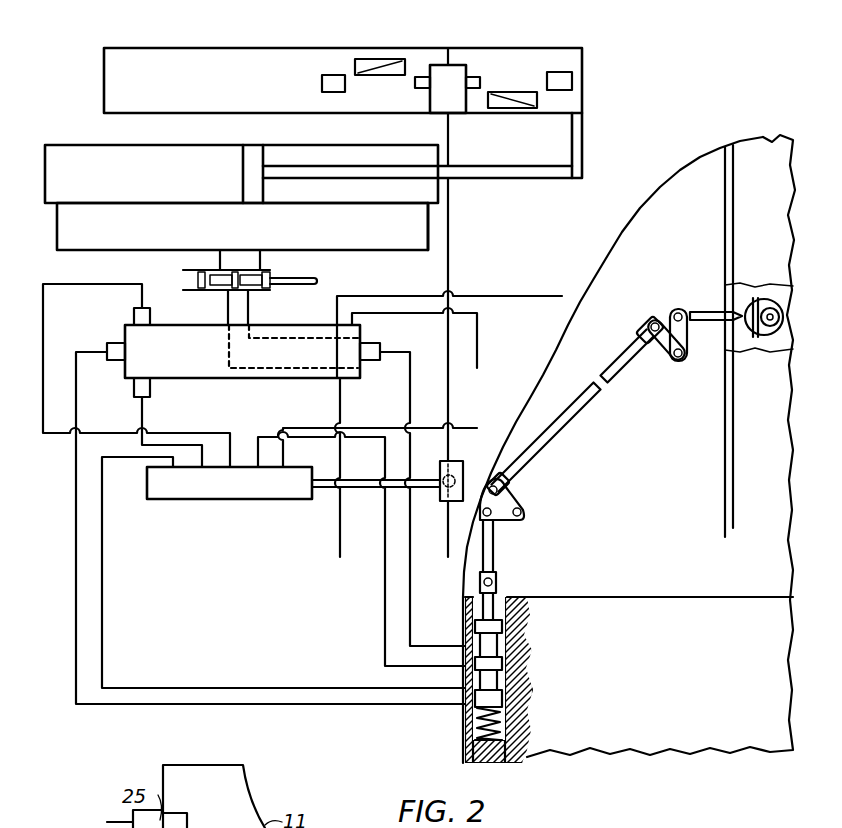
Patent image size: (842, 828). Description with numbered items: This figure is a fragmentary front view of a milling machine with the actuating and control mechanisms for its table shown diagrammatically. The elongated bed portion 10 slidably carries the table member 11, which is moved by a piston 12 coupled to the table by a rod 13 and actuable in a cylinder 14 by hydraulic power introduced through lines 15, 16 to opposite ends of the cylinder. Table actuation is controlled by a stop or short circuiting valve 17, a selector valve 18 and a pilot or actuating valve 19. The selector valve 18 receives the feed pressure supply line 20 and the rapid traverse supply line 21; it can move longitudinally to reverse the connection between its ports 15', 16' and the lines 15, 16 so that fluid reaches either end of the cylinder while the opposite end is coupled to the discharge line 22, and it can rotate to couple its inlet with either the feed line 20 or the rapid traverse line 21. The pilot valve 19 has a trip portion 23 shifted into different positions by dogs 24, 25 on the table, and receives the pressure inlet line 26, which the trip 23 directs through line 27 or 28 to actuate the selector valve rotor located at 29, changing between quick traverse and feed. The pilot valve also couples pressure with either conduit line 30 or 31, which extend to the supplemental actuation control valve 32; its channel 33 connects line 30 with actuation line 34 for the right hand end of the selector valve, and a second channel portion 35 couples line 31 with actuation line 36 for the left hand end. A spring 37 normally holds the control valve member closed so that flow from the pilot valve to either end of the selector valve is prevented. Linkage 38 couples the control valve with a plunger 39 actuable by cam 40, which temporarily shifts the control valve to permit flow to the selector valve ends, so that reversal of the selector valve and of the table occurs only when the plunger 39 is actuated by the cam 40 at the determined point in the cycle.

The bed portion 10 is at (438, 31).
The table member 11 is at (576, 60).
The piston 12 is at (252, 158).
The rod 13 is at (538, 177).
The cylinder 14 is at (76, 158).
The line 15 is at (217, 226).
The line 16 is at (408, 226).
The port 15' is at (206, 287).
The port 16' is at (266, 287).
The stop or short circuiting valve 17 is at (300, 278).
The selector valve 18 is at (316, 376).
The pilot or actuating valve 19 is at (240, 499).
The feed pressure supply line 20 is at (492, 282).
The rapid traverse supply line 21 is at (426, 313).
The discharge line 22 is at (340, 550).
The trip portion 23 is at (456, 500).
The dog 24 is at (346, 92).
The dog 25 is at (401, 76).
The pressure or hydraulic inlet line 26 is at (388, 428).
The line 27 is at (142, 422).
The line 28 is at (228, 421).
The selector valve rotor 29 is at (134, 318).
The conduit line 30 is at (385, 612).
The conduit line 31 is at (102, 622).
The supplemental actuation control valve 32 is at (527, 656).
The channel 33 is at (527, 631).
The actuation line 34 is at (412, 591).
The second channel portion 35 is at (527, 684).
The actuation line 36 is at (266, 704).
The spring 37 is at (525, 718).
The linkage 38 is at (590, 417).
The plunger 39 is at (715, 308).
The cam 40 is at (762, 298).